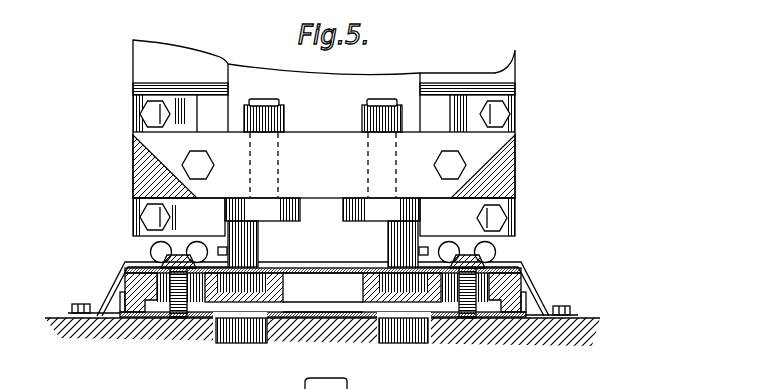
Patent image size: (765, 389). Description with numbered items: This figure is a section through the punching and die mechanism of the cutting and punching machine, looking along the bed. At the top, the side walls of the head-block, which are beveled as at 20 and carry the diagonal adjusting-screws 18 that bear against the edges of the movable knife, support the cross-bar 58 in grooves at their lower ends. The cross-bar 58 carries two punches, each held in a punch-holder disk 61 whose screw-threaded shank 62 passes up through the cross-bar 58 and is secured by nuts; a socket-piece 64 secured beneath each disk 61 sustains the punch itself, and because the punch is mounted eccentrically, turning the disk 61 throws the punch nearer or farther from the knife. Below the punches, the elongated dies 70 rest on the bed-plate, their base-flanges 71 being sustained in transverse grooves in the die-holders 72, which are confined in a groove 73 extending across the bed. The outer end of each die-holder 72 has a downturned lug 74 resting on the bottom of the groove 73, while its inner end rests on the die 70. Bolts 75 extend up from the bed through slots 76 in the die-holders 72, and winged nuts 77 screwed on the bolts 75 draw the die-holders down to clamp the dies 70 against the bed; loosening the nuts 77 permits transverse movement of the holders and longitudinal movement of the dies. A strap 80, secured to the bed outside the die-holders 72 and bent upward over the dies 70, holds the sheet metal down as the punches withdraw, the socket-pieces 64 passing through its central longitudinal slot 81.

The adjusting-screws 18 is at (143, 114).
The beveled side walls 20 is at (134, 208).
The cross-bar 58 is at (304, 138).
The disk 61 is at (344, 209).
The screw-threaded shank 62 is at (375, 103).
The socket-piece 64 is at (390, 241).
The dies 70 is at (230, 320).
The base-flanges 71 is at (268, 318).
The die-holders 72 is at (353, 283).
The groove 73 is at (313, 305).
The downturned flange or lug 74 is at (137, 304).
The bolts 75 is at (178, 318).
The slots 76 is at (162, 281).
The winged nuts 77 is at (152, 257).
The strap 80 is at (545, 293).
The central longitudinal slot 81 is at (333, 268).